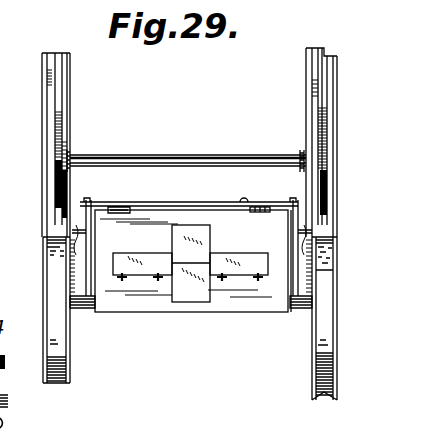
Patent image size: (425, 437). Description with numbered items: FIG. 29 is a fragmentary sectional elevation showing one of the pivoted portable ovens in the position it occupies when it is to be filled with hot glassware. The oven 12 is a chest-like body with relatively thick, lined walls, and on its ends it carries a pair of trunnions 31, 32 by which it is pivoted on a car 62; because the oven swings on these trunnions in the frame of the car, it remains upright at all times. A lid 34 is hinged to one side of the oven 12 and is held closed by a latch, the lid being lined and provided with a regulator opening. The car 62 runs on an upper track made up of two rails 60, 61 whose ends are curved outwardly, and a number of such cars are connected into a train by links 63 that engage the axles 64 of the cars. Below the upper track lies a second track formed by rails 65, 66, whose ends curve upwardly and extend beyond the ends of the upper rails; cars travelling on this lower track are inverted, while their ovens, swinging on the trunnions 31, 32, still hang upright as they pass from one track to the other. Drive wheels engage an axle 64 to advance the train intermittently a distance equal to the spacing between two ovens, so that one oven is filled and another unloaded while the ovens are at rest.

The oven 12 is at (238, 313).
The trunnion 31 is at (75, 256).
The trunnion 32 is at (308, 268).
The lid 34 is at (220, 210).
The rail 60 is at (323, 70).
The rail 61 is at (55, 93).
The car 62 is at (72, 183).
The link 63 is at (72, 113).
The axle 64 is at (196, 156).
The rail 65 is at (70, 352).
The rail 66 is at (338, 350).